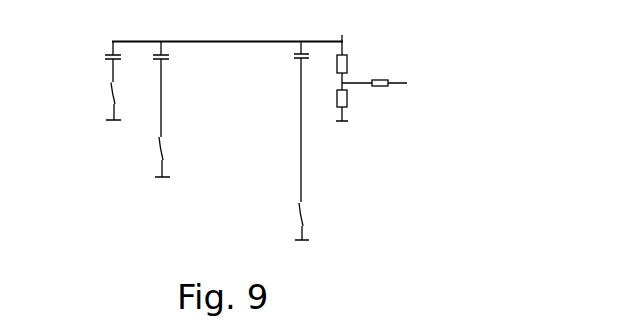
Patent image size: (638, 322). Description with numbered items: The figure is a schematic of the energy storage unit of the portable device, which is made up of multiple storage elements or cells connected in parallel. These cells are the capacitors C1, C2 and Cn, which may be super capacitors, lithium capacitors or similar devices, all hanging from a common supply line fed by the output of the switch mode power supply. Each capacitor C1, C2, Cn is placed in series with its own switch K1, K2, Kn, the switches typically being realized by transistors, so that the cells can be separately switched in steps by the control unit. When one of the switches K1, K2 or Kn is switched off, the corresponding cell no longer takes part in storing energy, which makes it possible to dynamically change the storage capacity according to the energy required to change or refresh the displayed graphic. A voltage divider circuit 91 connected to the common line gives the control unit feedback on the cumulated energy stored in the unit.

The capacitor C1 is at (117, 40).
The capacitor C2 is at (161, 41).
The capacitor Cn is at (298, 40).
The switch K1 is at (101, 92).
The switch K2 is at (147, 121).
The switch Kn is at (288, 153).
The voltage divider circuit 91 is at (356, 72).